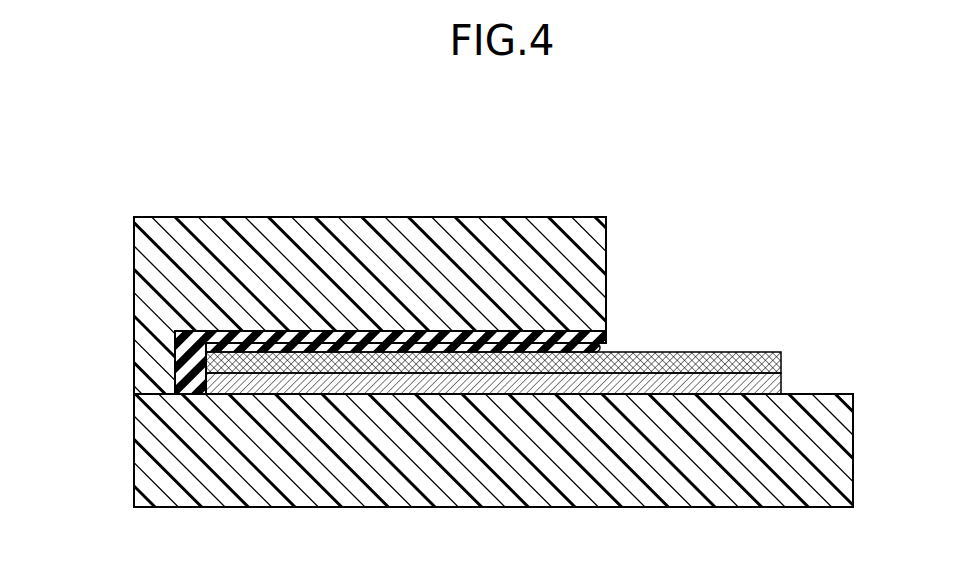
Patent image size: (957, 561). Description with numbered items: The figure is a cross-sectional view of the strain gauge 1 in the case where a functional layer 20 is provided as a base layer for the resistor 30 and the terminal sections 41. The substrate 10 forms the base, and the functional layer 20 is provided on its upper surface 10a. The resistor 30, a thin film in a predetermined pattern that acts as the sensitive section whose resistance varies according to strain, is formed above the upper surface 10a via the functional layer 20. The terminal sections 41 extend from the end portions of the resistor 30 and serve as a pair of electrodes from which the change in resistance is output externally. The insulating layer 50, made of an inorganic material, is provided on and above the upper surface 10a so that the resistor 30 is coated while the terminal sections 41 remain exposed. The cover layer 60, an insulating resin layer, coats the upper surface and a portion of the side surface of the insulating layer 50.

The strain gauge 1 is at (70, 148).
The substrate 10 is at (156, 441).
The upper surface of the substrate 10a is at (172, 393).
The functional layer 20 is at (782, 381).
The resistor 30 is at (412, 344).
The terminal sections 41 is at (613, 346).
The insulating layer 50 is at (188, 342).
The cover layer 60 is at (480, 217).